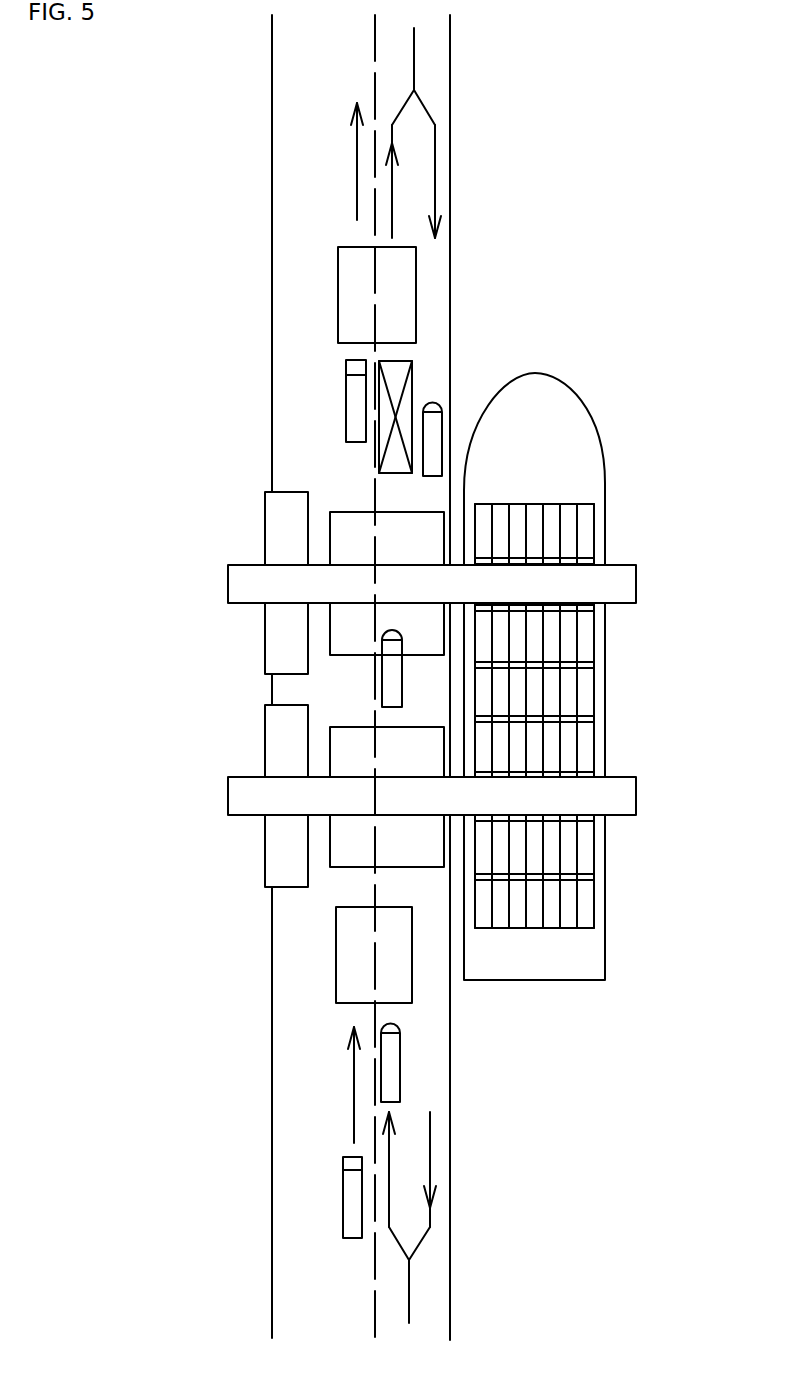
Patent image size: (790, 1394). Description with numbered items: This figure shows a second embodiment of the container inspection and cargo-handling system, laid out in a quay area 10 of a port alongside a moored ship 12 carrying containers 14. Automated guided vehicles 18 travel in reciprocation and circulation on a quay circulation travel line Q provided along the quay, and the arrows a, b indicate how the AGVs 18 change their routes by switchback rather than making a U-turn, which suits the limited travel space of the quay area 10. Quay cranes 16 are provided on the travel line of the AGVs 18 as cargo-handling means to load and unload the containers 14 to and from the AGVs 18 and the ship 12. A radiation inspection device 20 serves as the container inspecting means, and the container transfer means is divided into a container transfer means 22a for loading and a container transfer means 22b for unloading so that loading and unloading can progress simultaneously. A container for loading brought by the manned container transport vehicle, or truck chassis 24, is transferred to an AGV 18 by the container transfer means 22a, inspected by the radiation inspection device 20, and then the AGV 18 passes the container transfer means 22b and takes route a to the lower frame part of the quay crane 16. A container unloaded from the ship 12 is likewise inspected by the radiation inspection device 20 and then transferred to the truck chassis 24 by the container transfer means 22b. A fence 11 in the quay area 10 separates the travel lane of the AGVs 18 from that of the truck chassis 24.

The quay area 10 is at (452, 93).
The fence 11 is at (367, 1280).
The container ship 12 is at (585, 435).
The containers 14 is at (588, 537).
The quay crane 16 is at (627, 585).
The automated guided vehicle 18 is at (437, 425).
The radiation inspection device 20 is at (407, 395).
The container transfer means for loading 22a is at (405, 992).
The container transfer means for unloading 22b is at (408, 260).
The container transport vehicle 24 is at (348, 1217).
The route a is at (436, 173).
The route b is at (432, 1162).
The quay circulation travel line Q is at (422, 1242).